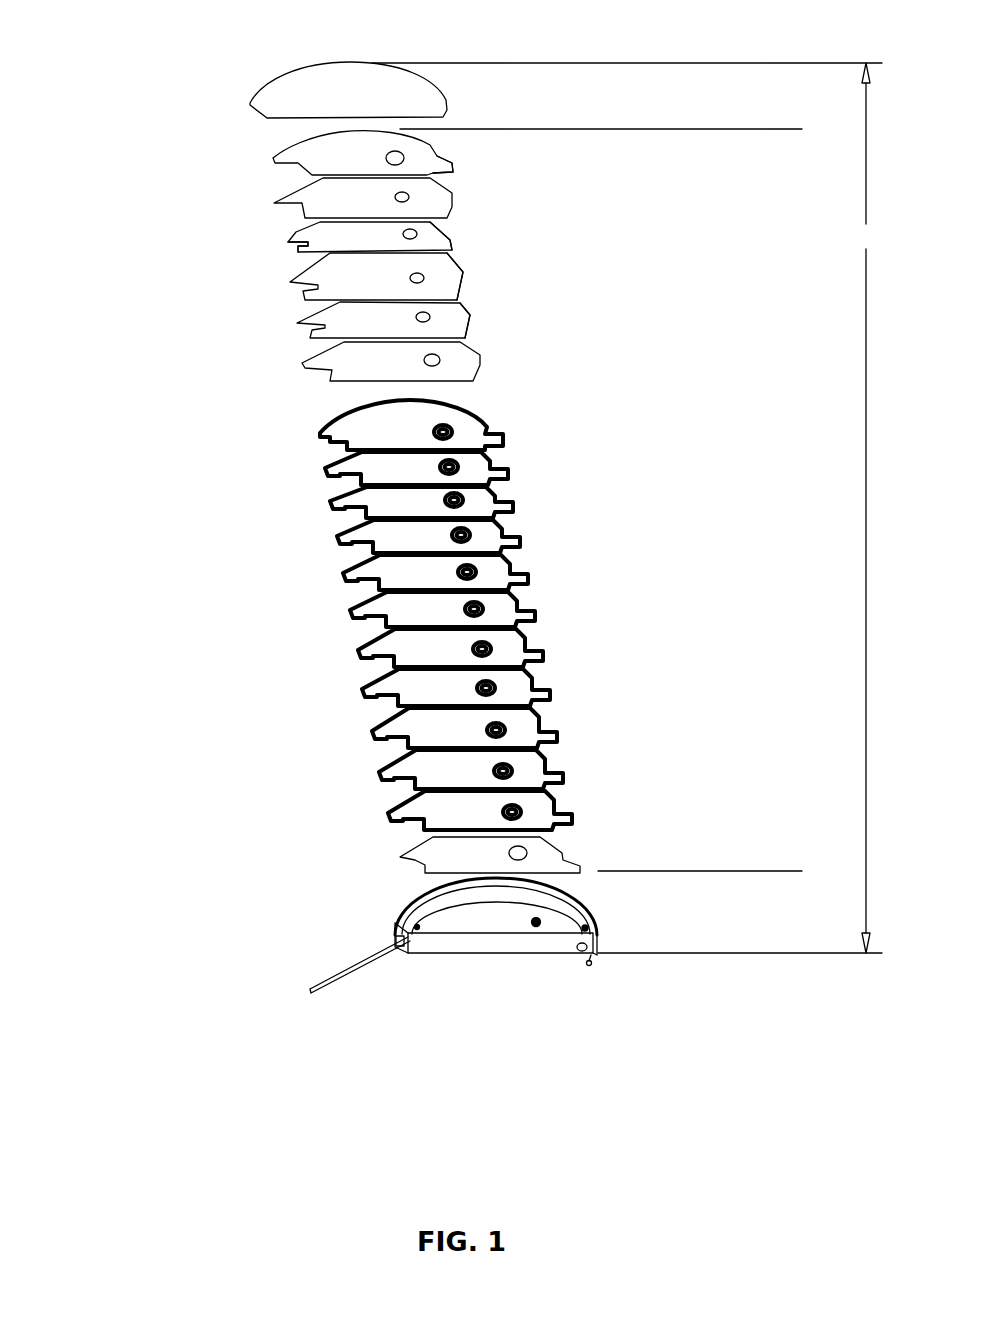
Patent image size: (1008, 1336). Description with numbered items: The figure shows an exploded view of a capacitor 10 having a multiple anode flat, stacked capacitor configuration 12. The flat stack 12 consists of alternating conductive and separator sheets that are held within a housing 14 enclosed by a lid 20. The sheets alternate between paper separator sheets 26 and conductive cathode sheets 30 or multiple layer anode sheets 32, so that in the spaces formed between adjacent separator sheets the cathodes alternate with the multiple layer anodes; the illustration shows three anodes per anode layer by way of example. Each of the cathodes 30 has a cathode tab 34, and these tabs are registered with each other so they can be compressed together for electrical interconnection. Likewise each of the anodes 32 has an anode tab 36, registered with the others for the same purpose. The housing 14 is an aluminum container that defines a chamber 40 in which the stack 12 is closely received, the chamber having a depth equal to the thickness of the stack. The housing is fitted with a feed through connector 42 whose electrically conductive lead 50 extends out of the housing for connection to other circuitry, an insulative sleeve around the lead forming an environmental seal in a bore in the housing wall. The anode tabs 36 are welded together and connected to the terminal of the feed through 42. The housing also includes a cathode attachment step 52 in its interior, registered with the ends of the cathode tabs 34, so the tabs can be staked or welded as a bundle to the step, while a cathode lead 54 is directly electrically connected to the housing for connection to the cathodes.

The capacitor 10 is at (859, 508).
The flat stack 12 is at (784, 871).
The housing 14 is at (545, 957).
The lid 20 is at (257, 93).
The paper separator sheets 26 is at (303, 365).
The conductive cathode sheets 30 is at (270, 157).
The multiple layer anode sheets 32 is at (470, 319).
The cathode tab 34 is at (457, 167).
The anode tab 36 is at (295, 250).
The chamber 40 is at (619, 869).
The feed through connector 42 is at (392, 940).
The electrically conductive lead 50 is at (300, 985).
The cathode attachment step 52 is at (594, 920).
The cathode lead 54 is at (595, 968).